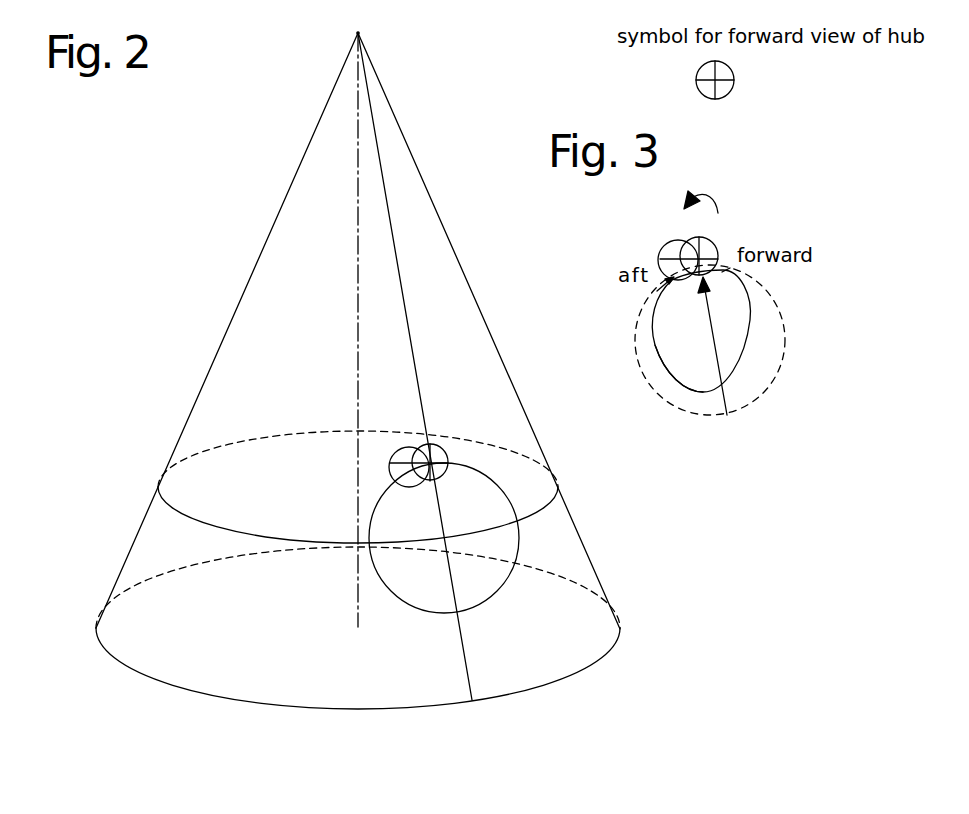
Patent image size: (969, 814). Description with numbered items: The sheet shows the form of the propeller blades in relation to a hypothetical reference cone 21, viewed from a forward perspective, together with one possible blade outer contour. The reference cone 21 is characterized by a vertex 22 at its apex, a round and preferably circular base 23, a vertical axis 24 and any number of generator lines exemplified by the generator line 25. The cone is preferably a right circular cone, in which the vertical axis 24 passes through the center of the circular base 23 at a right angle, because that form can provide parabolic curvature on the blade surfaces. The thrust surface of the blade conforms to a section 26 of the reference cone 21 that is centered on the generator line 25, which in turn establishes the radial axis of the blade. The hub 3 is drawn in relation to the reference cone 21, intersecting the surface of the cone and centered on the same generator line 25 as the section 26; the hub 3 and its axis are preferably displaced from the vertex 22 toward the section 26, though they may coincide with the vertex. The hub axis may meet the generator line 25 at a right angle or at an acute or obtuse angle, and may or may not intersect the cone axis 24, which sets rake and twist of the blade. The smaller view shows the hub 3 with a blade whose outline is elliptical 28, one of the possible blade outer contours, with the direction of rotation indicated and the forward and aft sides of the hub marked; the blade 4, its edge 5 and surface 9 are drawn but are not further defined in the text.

In FIG. 2, the hub 3 is at (438, 448).
In FIG. 3, the hub 3 is at (683, 243).
In FIG. 3, the propeller blade 4 is at (750, 314).
In FIG. 3, the blade trailing edge 5 is at (677, 378).
In FIG. 3, the blade surface 9 is at (734, 335).
In FIG. 2, the reference cone 21 is at (114, 525).
In FIG. 2, the vertex 22 is at (358, 33).
In FIG. 2, the base 23 is at (136, 674).
In FIG. 2, the vertical axis 24 is at (357, 337).
In FIG. 2, the generator line 25 is at (412, 333).
In FIG. 3, the generator line 25 is at (736, 384).
In FIG. 2, the section 26 is at (510, 588).
In FIG. 3, the elliptical blade outline 28 is at (673, 353).